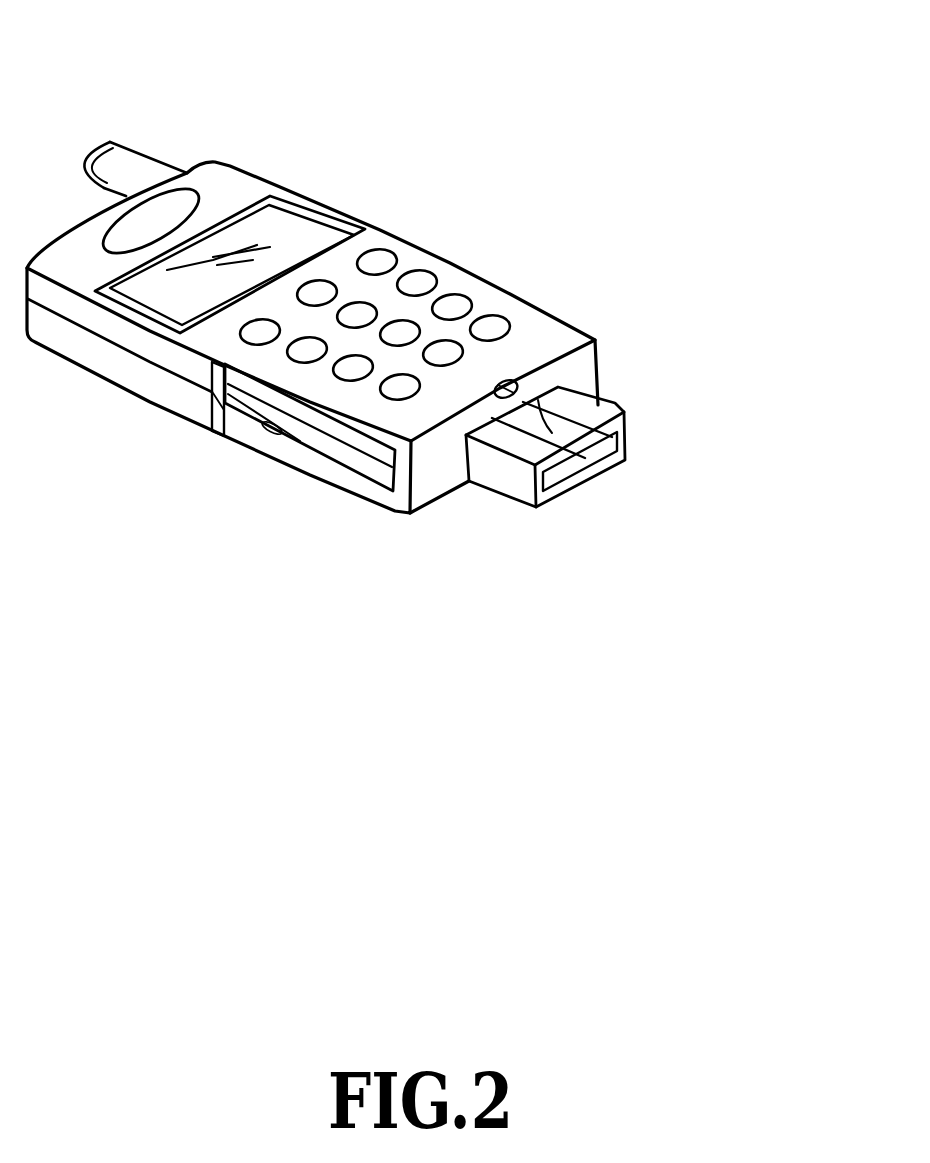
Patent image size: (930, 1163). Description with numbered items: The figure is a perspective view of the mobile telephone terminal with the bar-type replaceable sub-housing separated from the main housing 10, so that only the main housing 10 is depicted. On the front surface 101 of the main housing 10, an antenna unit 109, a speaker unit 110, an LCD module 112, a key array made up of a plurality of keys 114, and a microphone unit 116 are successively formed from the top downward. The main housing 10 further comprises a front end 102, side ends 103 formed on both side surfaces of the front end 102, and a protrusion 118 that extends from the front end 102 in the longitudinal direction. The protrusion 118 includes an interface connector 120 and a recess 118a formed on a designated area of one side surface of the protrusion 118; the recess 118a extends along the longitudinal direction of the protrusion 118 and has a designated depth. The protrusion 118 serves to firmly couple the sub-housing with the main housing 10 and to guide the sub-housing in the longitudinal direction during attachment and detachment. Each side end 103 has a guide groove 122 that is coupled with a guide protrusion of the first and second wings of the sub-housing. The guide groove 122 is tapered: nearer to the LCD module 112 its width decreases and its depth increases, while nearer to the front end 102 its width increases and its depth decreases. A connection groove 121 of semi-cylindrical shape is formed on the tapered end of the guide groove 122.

The main housing 10 is at (328, 333).
The front surface 101 is at (233, 200).
The front end 102 is at (443, 477).
The side end 103 is at (283, 448).
The antenna unit 109 is at (119, 167).
The speaker unit 110 is at (157, 217).
The LCD module 112 is at (282, 232).
The keys 114 is at (377, 262).
The microphone unit 116 is at (540, 375).
The protrusion 118 is at (618, 405).
The recess 118a is at (520, 372).
The interface connector 120 is at (627, 441).
The connection groove 121 is at (227, 437).
The guide groove 122 is at (333, 470).